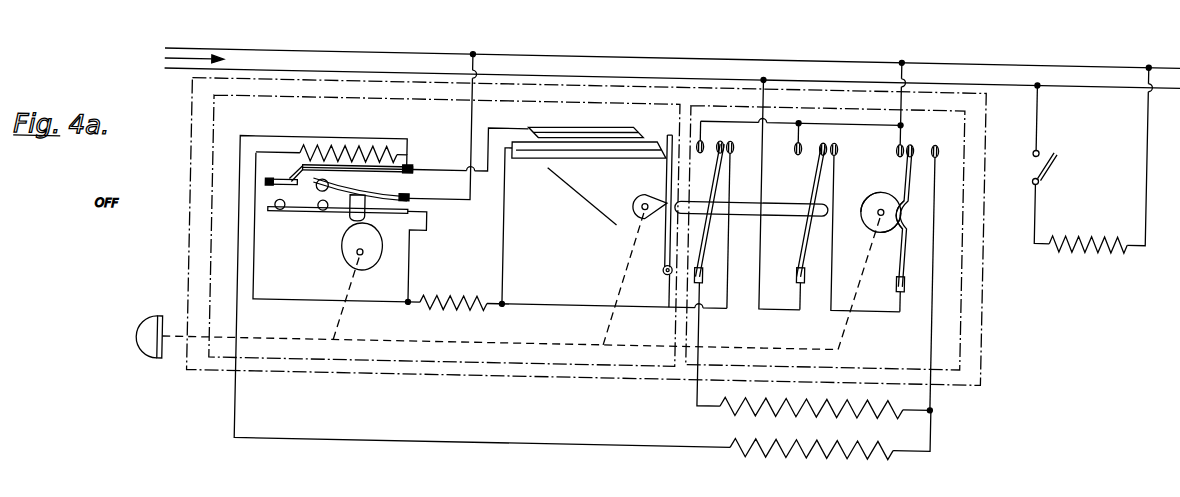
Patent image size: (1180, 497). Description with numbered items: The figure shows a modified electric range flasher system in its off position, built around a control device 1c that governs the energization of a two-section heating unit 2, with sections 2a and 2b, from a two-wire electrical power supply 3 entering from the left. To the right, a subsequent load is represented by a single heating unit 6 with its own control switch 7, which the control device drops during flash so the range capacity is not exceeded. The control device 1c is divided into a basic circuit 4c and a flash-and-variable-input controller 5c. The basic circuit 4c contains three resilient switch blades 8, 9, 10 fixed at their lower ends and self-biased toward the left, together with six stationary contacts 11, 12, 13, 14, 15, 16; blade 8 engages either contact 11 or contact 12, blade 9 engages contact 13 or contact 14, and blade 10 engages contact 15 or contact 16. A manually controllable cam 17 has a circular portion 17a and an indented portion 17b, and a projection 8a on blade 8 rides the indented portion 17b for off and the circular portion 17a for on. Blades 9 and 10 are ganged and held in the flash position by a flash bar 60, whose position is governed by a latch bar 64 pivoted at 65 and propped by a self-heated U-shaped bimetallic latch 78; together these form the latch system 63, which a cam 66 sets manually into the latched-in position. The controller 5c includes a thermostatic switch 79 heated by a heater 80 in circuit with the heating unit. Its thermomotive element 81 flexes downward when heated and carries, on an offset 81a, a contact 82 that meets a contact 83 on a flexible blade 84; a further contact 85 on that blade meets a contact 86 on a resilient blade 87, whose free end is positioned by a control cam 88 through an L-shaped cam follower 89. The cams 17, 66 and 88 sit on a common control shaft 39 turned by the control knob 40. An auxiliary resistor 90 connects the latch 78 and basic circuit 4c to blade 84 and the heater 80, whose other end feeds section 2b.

The control device 1c is at (595, 364).
The two-section heating unit 2 is at (941, 378).
The section of the heating unit 2a is at (905, 397).
The section of the heating unit 2b is at (898, 436).
The two-wire electrical power supply 3 is at (143, 28).
The basic circuit 4c is at (1006, 314).
The flash-and-variable-input controller 5c is at (470, 357).
The heating unit 6 is at (1090, 224).
The control switch 7 is at (1058, 147).
The switch blade 8 is at (909, 260).
The projection 8a is at (907, 204).
The switch blade 9 is at (809, 258).
The switch blade 10 is at (705, 259).
The stationary contact 11 is at (940, 135).
The stationary contact 12 is at (899, 135).
The stationary contact 13 is at (840, 136).
The stationary contact 14 is at (797, 136).
The stationary contact 15 is at (736, 135).
The stationary contact 16 is at (705, 133).
The manually controllable cam 17 is at (885, 177).
The circular portion 17a is at (866, 196).
The indented portion 17b is at (891, 217).
The control shaft 39 is at (531, 337).
The control knob 40 is at (152, 317).
The flash bar 60 is at (780, 191).
The latch system 63 is at (583, 223).
The latch bar 64 is at (672, 230).
The pivot 65 is at (670, 264).
The cam 66 is at (648, 187).
The U-shaped bimetallic latch 78 is at (620, 118).
The thermostatic switch 79 is at (452, 190).
The heater 80 is at (342, 146).
The thermomotive element 81 is at (412, 158).
The offset 81a is at (292, 174).
The contact 82 is at (278, 173).
The contact 83 is at (284, 209).
The flexible blade 84 is at (346, 210).
The contact 85 is at (327, 208).
The contact 86 is at (325, 188).
The resilient blade 87 is at (362, 189).
The control cam 88 is at (369, 255).
The cam follower 89 is at (370, 216).
The auxiliary resistor 90 is at (450, 294).